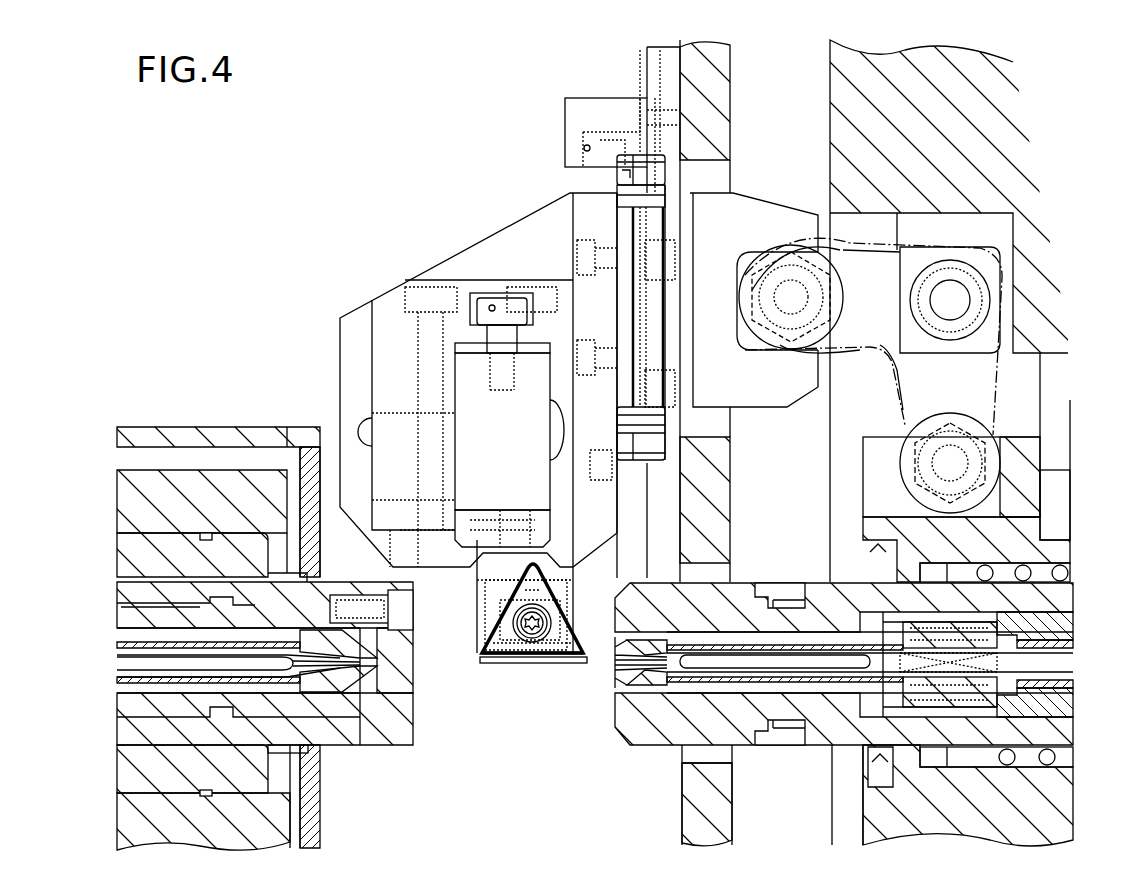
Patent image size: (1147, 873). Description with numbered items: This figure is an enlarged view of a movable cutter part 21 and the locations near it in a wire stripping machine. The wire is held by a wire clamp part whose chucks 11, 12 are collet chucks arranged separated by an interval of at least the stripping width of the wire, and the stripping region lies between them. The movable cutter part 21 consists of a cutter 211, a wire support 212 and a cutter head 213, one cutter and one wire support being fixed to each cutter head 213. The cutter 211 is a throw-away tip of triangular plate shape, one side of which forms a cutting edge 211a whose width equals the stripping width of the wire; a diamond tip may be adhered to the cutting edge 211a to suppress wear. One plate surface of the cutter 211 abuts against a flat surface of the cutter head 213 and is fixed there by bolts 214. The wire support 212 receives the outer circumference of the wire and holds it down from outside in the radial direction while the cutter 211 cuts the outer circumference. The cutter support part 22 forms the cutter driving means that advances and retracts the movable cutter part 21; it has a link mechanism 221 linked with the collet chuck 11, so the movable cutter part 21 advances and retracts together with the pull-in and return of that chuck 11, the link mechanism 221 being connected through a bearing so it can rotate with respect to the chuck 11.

The chuck 11 is at (643, 686).
The chuck 12 is at (345, 715).
The movable cutter part 21 is at (463, 200).
The cutter 211 is at (500, 663).
The cutting edge 211a is at (535, 663).
The wire support 212 is at (575, 663).
The cutter head 213 is at (477, 403).
The bolts 214 is at (548, 620).
The cutter support part 22 is at (1033, 208).
The link mechanism 221 is at (1005, 318).